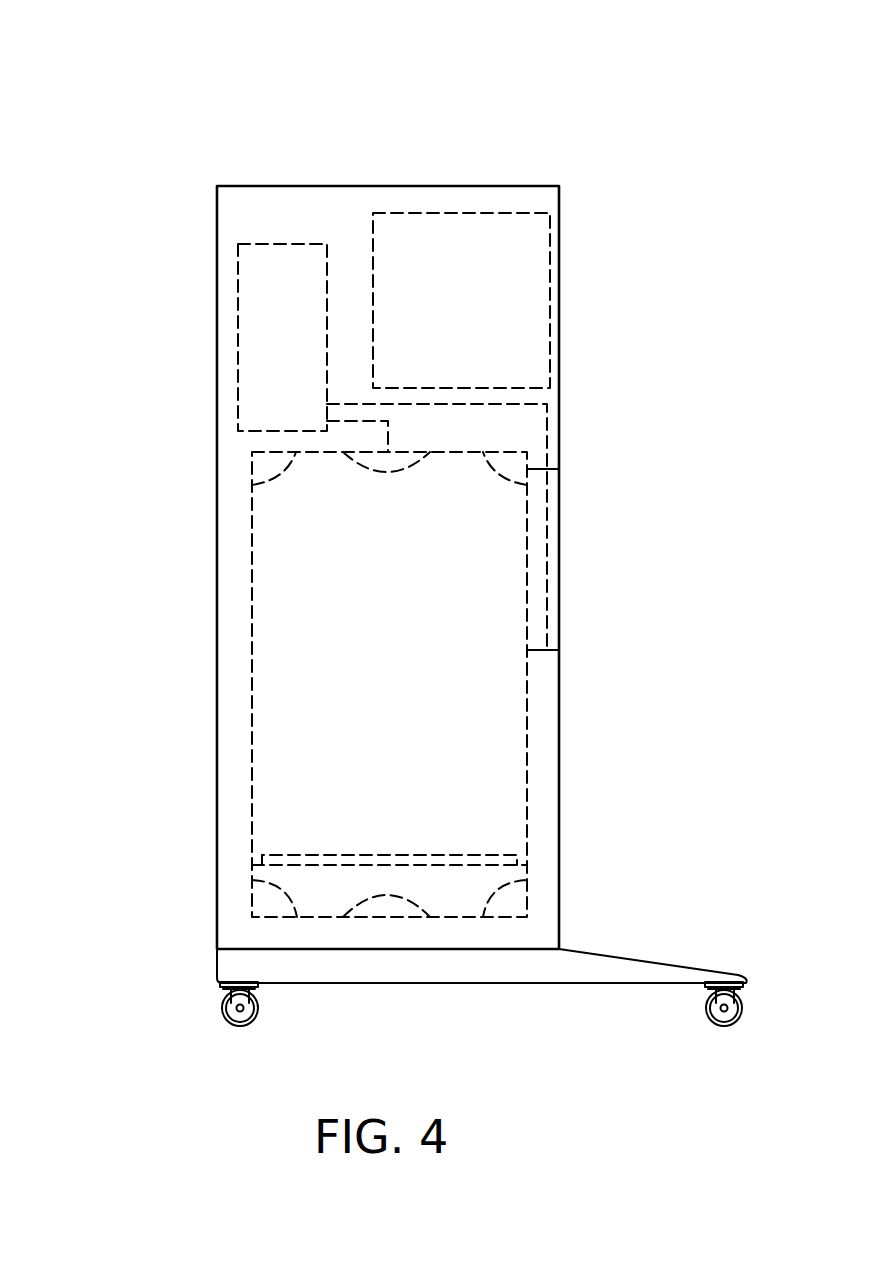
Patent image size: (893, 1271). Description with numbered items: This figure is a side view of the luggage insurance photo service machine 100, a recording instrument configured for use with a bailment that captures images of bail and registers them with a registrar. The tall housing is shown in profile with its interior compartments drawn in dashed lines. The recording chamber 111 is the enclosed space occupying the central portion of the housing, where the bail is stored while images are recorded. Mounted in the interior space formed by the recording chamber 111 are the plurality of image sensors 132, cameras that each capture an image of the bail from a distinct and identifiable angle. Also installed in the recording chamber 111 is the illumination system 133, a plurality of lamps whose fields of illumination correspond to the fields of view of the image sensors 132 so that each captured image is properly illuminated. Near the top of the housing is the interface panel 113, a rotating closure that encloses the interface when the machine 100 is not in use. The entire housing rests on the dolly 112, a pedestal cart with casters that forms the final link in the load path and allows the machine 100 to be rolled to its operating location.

The luggage insurance photo service machine 100 is at (132, 135).
The recording chamber 111 is at (468, 798).
The dolly 112 is at (662, 967).
The interface panel 113 is at (476, 324).
The plurality of image sensors 132 is at (504, 470).
The illumination system 133 is at (270, 902).